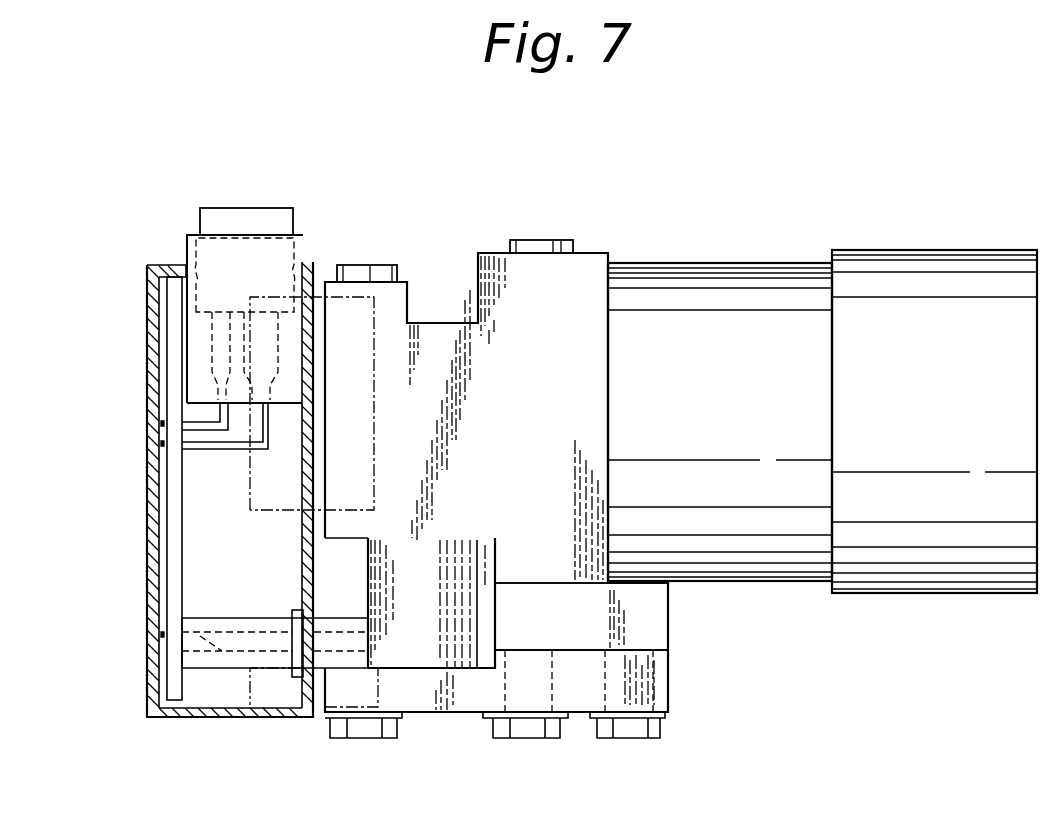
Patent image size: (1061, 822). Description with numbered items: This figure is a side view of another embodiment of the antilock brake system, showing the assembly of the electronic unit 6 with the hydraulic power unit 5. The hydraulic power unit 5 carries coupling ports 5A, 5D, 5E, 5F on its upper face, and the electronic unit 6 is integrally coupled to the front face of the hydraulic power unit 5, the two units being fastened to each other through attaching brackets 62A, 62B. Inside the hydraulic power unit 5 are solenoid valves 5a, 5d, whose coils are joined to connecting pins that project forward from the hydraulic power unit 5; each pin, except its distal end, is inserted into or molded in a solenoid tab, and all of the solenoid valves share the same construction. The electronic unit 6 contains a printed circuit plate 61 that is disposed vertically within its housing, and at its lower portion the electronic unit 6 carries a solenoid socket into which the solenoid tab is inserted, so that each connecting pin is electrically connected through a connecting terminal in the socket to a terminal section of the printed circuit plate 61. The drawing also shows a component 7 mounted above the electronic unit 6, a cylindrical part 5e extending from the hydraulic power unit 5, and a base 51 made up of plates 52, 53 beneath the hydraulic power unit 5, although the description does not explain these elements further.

The light source unit 7 is at (232, 208).
The hydraulic power unit 5 is at (436, 266).
The coupling port 5A is at (386, 208).
The coupling port 5D is at (357, 265).
The coupling port 5E is at (562, 213).
The coupling port 5F is at (540, 240).
The lens barrel 5e is at (745, 263).
The solenoid valve 5a is at (470, 567).
The solenoid valve 5d is at (478, 572).
The electronic unit 6 is at (136, 500).
The printed circuit plate 61 is at (180, 568).
The attaching bracket 62A is at (385, 352).
The attaching bracket 62B is at (378, 696).
The base 51 is at (772, 603).
The upper base plate 52 is at (668, 615).
The lower base plate 53 is at (668, 688).